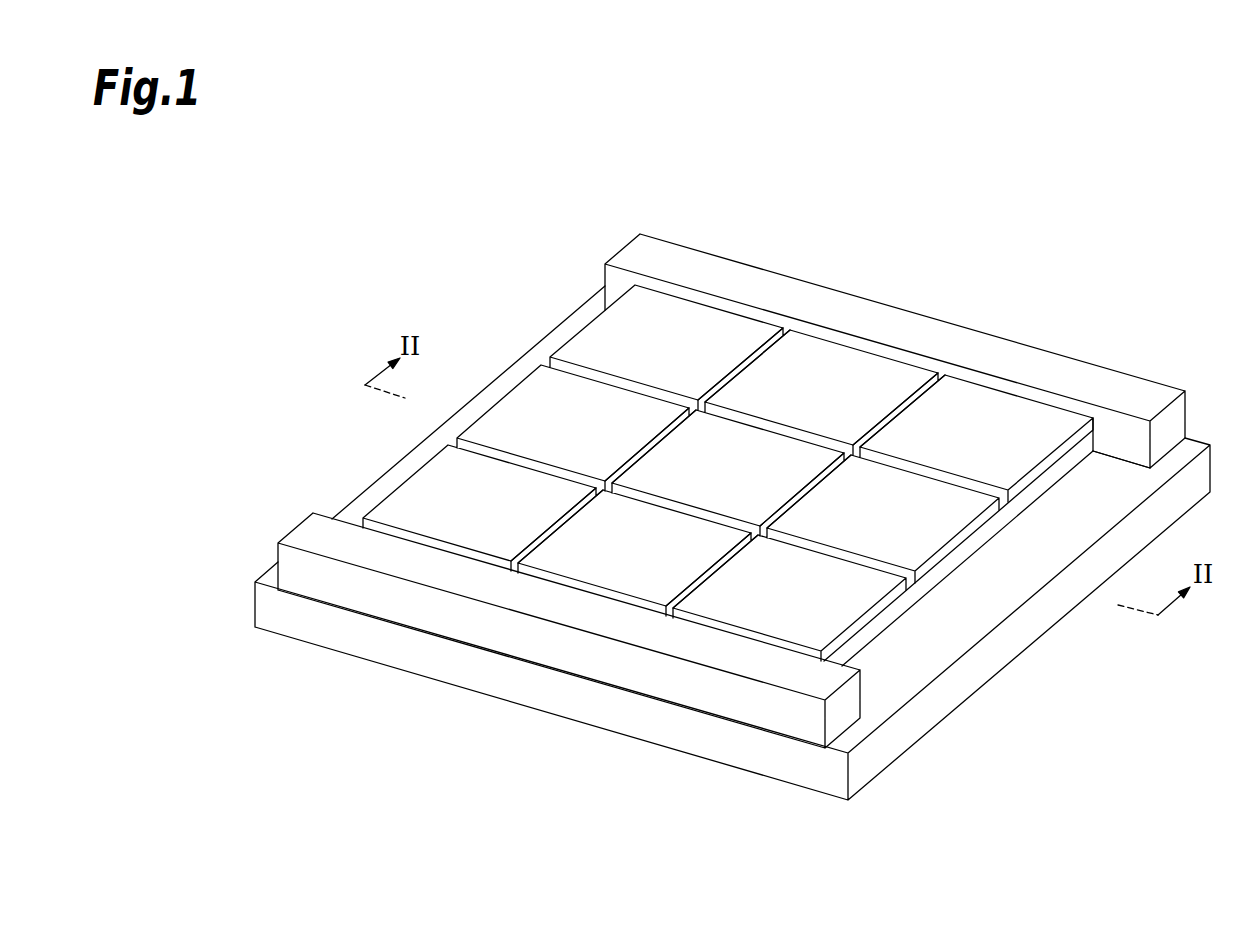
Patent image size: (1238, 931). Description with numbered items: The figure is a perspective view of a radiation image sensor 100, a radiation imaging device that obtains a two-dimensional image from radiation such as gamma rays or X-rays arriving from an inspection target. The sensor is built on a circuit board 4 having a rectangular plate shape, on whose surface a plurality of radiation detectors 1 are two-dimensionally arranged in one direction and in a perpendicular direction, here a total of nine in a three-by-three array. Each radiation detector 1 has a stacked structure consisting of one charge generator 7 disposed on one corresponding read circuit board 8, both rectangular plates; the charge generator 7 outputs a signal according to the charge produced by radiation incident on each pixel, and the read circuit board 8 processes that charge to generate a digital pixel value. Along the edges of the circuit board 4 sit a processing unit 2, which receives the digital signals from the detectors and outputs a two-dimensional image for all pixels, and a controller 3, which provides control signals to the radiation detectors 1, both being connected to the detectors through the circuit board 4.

The radiation image sensor 100 is at (550, 216).
The radiation detector 1 is at (588, 352).
The processing unit 2 is at (316, 540).
The controller 3 is at (640, 258).
The circuit board 4 is at (1003, 651).
The charge generator 7 is at (788, 327).
The read circuit board 8 is at (1104, 444).